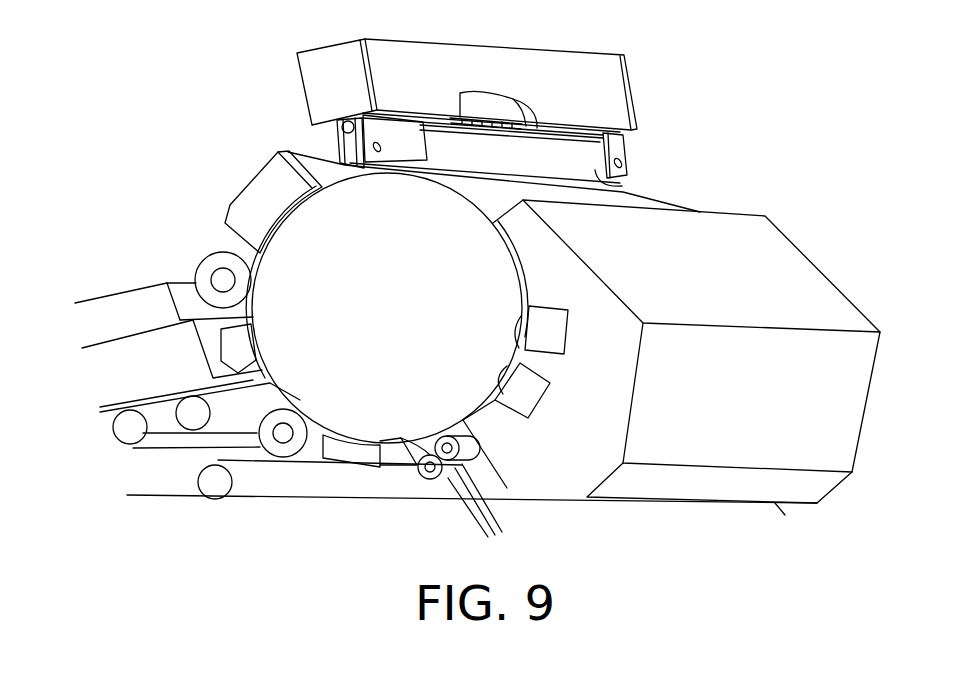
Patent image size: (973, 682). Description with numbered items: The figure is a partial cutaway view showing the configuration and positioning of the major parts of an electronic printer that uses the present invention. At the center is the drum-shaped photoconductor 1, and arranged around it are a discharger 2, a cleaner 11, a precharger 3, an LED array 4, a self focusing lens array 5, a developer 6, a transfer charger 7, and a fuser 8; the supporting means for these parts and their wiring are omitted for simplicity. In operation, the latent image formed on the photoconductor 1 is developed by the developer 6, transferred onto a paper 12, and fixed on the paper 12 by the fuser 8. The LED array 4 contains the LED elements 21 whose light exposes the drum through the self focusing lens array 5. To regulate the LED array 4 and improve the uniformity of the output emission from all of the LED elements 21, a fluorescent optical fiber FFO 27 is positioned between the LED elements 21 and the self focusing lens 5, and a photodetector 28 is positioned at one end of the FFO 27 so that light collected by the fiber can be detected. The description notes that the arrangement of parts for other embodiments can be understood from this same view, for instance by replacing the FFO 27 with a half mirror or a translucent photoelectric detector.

The photoconductor 1 is at (488, 238).
The discharger 2 is at (237, 336).
The precharger 3 is at (285, 193).
The LED array 4 is at (432, 60).
The self focusing lens array 5 is at (620, 187).
The developer 6 is at (780, 265).
The transfer charger 7 is at (357, 452).
The fuser 8 is at (133, 353).
The cleaner 11 is at (240, 271).
The paper 12 is at (484, 522).
The LED elements 21 is at (510, 110).
The fluorescent optical fiber FFO 27 is at (622, 137).
The photodetector 28 is at (338, 123).